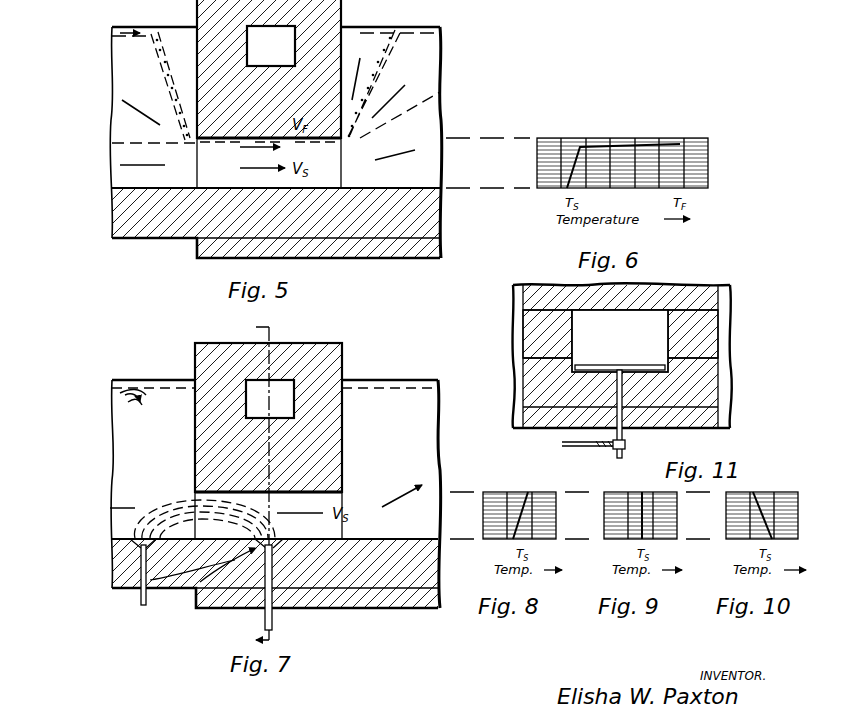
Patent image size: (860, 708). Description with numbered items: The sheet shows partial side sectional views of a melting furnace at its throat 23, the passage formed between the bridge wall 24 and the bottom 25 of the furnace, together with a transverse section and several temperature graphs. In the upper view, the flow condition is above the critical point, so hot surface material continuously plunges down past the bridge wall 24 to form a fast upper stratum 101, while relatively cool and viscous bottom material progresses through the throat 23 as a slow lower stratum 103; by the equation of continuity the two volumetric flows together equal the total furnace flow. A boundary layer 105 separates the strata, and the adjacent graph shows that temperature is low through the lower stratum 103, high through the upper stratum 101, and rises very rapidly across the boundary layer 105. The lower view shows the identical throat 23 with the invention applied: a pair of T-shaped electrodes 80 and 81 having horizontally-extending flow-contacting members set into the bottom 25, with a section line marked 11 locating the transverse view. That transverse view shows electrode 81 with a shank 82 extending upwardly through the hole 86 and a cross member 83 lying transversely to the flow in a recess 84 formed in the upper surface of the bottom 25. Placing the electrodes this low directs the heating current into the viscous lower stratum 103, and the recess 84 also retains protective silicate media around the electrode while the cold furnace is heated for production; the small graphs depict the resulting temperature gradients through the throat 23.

In FIG. 5, the throat 23 is at (283, 192).
In FIG. 7, the throat 23 is at (296, 545).
In FIG. 11, the throat 23 is at (645, 340).
In FIG. 5, the bridge wall 24 is at (213, 22).
In FIG. 7, the bridge wall 24 is at (213, 380).
In FIG. 11, the bridge wall 24 is at (688, 298).
In FIG. 11, the bottom 25 is at (700, 395).
In FIG. 7, the T-shaped electrode 80 is at (138, 602).
In FIG. 7, the T-shaped electrode 81 is at (276, 621).
In FIG. 11, the T-shaped electrode 81 is at (612, 453).
In FIG. 11, the shank 82 is at (624, 400).
In FIG. 11, the cross member 83 is at (600, 365).
In FIG. 7, the recess 84 is at (185, 578).
In FIG. 11, the recess 84 is at (614, 365).
In FIG. 11, the hole 86 is at (624, 418).
In FIG. 5, the upper stratum 101 is at (216, 142).
In FIG. 5, the lower stratum 103 is at (223, 172).
In FIG. 7, the lower stratum 103 is at (293, 500).
In FIG. 5, the boundary layer 105 is at (140, 142).
In FIG. 7, the section line 11 is at (249, 484).